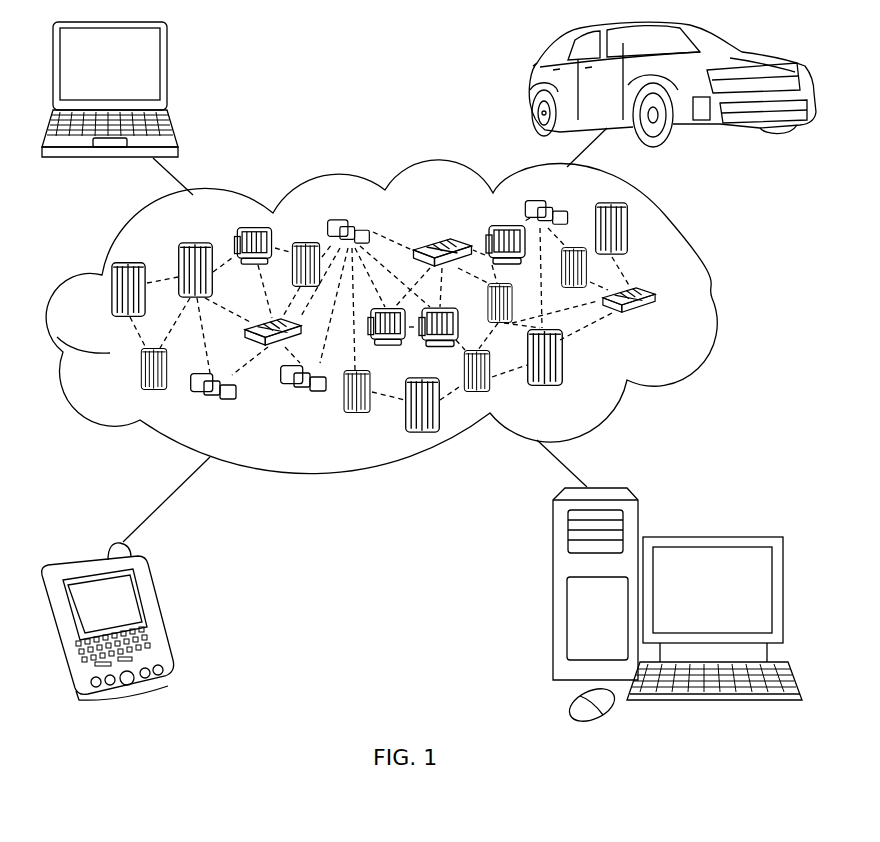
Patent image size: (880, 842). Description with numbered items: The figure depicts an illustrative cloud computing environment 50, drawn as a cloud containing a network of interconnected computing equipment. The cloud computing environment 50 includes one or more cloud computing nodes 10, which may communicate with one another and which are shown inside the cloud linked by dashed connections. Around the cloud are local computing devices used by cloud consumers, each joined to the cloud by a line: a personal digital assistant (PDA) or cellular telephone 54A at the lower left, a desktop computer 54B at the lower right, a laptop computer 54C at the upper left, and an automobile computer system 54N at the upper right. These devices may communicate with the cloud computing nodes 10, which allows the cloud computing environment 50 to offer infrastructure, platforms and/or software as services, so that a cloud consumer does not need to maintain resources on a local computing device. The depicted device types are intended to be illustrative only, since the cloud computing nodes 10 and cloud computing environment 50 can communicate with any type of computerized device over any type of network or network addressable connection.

The laptop computer 54C is at (168, 72).
The automobile computer system 54N is at (532, 85).
The personal digital assistant (PDA) or cellular telephone 54A is at (160, 613).
The desktop computer 54B is at (712, 535).
The cloud computing environment 50 is at (712, 298).
The cloud computing nodes 10 is at (670, 324).